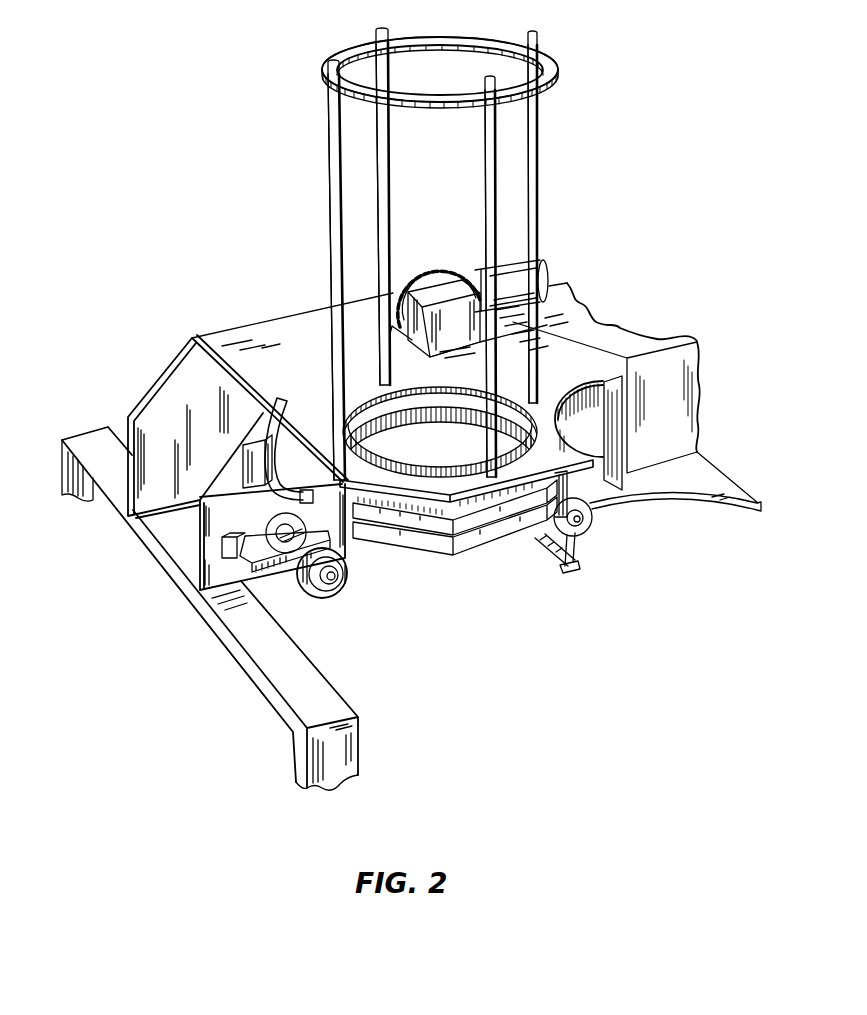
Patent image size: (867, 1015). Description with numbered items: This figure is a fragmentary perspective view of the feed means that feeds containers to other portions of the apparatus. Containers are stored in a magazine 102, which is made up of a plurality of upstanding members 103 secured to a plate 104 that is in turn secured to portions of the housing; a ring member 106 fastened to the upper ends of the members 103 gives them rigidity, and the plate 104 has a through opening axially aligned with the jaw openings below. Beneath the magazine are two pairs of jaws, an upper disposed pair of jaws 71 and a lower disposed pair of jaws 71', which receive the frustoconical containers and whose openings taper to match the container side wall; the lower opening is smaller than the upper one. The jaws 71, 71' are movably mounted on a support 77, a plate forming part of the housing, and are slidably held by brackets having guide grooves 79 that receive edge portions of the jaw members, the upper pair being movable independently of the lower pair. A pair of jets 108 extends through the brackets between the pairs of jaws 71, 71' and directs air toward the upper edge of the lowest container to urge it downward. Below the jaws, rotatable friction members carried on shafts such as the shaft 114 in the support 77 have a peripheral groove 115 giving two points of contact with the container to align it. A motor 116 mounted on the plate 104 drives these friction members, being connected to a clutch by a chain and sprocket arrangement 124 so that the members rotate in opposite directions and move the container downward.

The upper disposed pair of jaws 71 is at (455, 533).
The lower disposed pair of jaws 71' is at (455, 541).
The support 77 is at (208, 550).
The guide grooves 79 is at (350, 556).
The magazine 102 is at (318, 182).
The upstanding members 103 is at (540, 186).
The plate 104 is at (214, 340).
The ring member 106 is at (470, 37).
The jets 108 is at (298, 497).
The shaft 114 is at (272, 530).
The groove 115 is at (322, 586).
The motor 116 is at (548, 268).
The chain and sprocket arrangement 124 is at (440, 256).